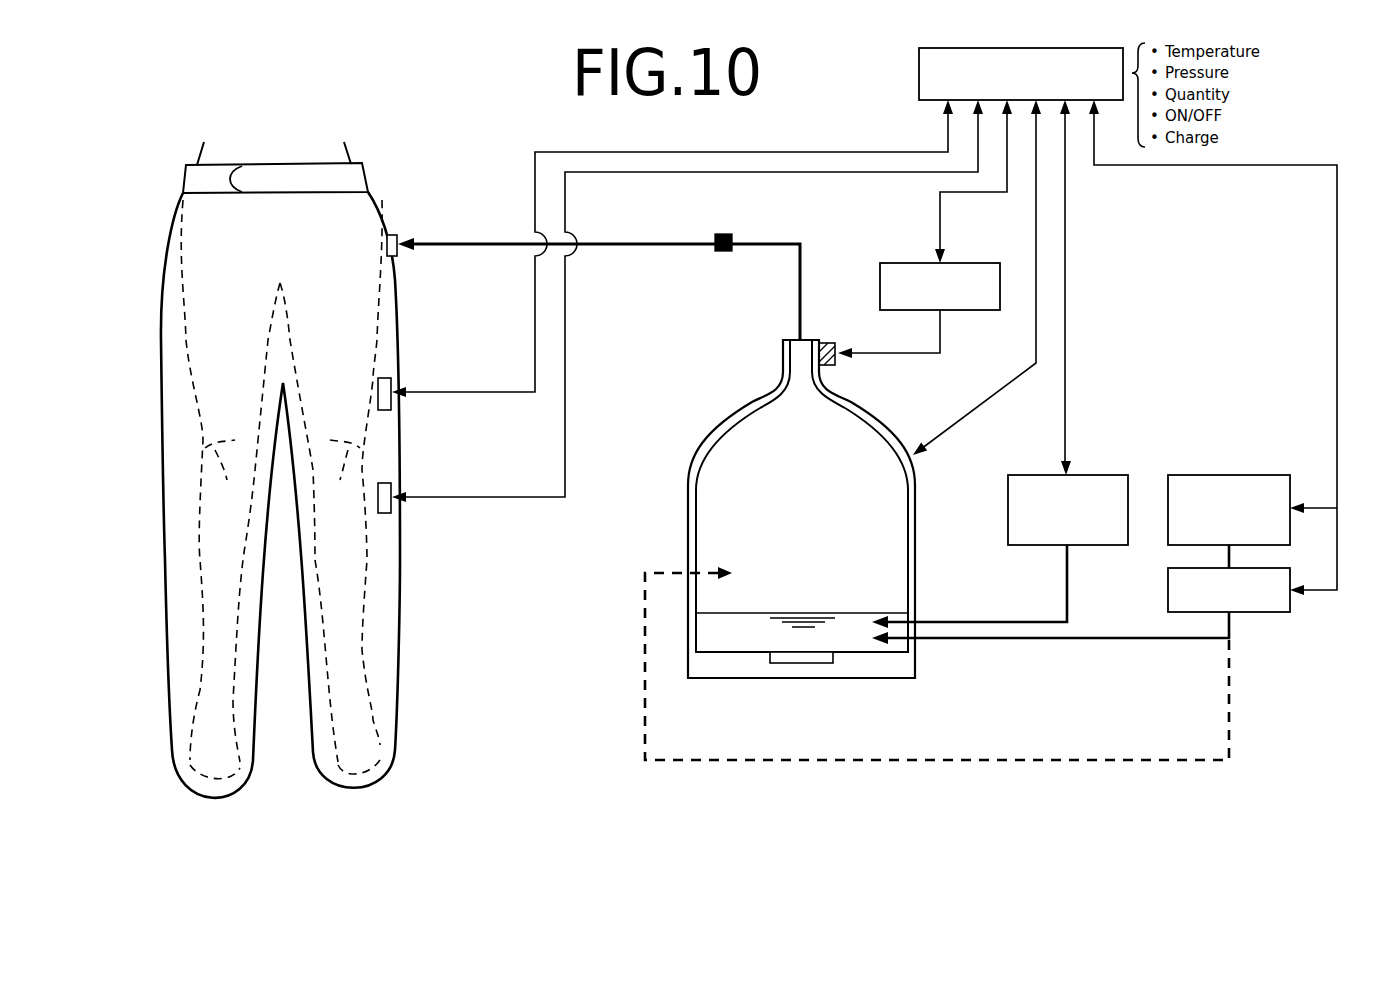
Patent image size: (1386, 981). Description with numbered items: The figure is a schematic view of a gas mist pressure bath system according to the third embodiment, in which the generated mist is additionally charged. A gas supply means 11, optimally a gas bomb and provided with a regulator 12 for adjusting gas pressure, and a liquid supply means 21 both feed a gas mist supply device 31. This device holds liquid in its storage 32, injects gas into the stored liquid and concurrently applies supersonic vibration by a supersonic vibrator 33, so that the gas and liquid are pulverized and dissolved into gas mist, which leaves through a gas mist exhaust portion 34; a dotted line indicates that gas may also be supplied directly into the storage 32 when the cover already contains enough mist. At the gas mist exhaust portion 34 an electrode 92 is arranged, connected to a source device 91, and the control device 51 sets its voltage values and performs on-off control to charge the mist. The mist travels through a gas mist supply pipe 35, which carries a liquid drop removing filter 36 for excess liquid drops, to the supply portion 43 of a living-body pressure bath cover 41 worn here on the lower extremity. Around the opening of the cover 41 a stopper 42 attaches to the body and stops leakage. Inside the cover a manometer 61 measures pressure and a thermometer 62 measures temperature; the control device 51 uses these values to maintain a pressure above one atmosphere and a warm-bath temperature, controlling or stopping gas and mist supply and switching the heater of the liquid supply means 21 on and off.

The living-body pressure bath cover 41 is at (170, 162).
The stopper 42 is at (368, 170).
The supply portion 43 is at (396, 233).
The manometer 61 is at (390, 378).
The thermometer 62 is at (390, 483).
The gas mist supply pipe 35 is at (630, 240).
The liquid drop removing filter 36 is at (725, 232).
The gas mist supply device 31 is at (806, 534).
The storage 32 is at (898, 512).
The supersonic vibrator 33 is at (818, 663).
The gas mist exhaust portion 34 is at (780, 357).
The control device 51 is at (919, 66).
The source device 91 is at (975, 263).
The electrode 92 is at (838, 368).
The liquid supply means 21 is at (1097, 475).
The gas supply means 11 is at (1258, 475).
The regulator 12 is at (1258, 612).